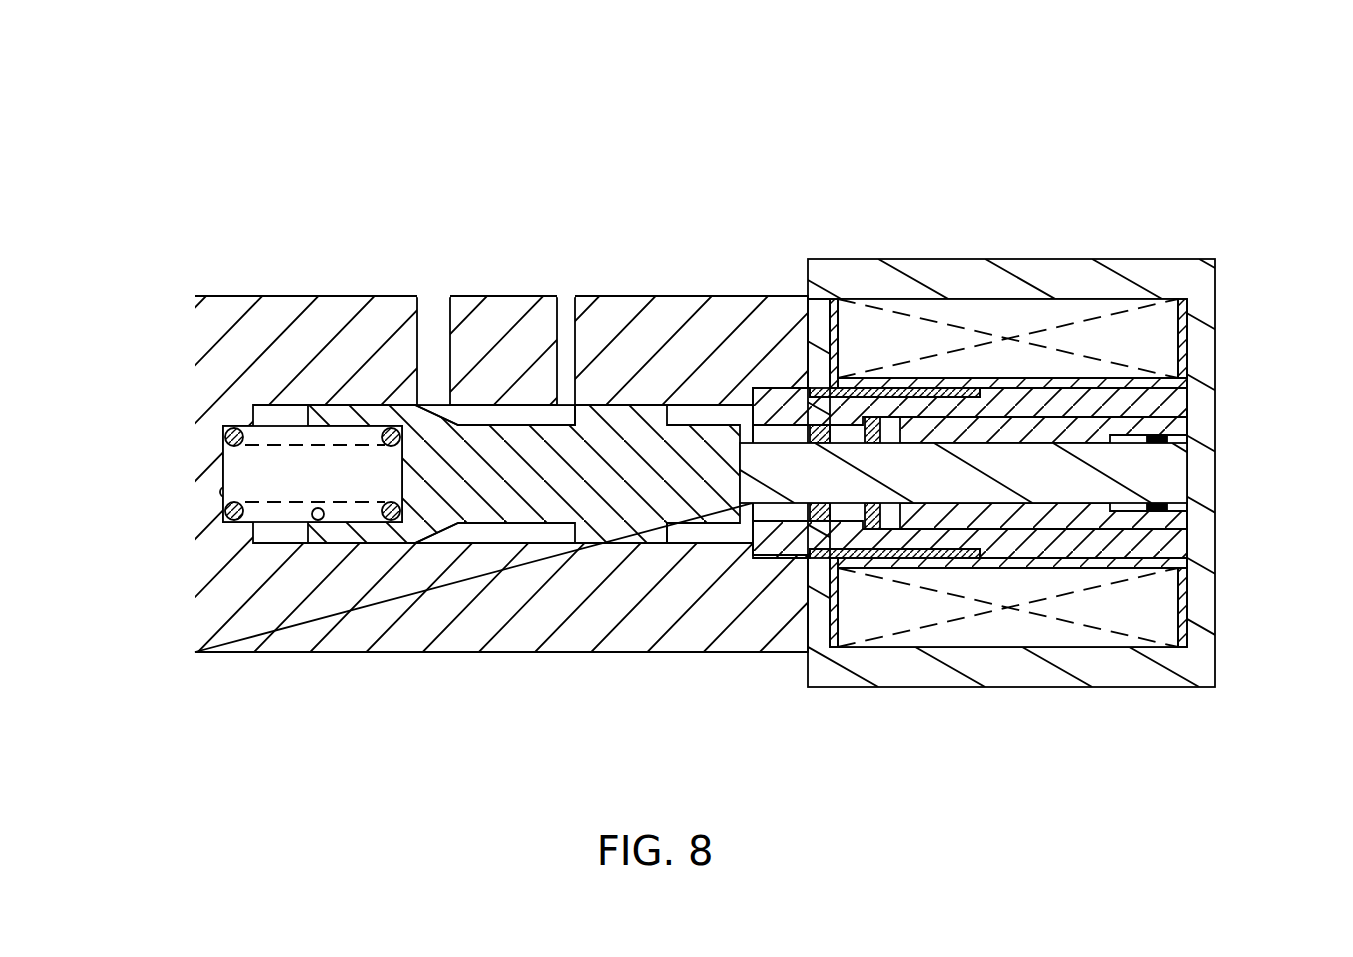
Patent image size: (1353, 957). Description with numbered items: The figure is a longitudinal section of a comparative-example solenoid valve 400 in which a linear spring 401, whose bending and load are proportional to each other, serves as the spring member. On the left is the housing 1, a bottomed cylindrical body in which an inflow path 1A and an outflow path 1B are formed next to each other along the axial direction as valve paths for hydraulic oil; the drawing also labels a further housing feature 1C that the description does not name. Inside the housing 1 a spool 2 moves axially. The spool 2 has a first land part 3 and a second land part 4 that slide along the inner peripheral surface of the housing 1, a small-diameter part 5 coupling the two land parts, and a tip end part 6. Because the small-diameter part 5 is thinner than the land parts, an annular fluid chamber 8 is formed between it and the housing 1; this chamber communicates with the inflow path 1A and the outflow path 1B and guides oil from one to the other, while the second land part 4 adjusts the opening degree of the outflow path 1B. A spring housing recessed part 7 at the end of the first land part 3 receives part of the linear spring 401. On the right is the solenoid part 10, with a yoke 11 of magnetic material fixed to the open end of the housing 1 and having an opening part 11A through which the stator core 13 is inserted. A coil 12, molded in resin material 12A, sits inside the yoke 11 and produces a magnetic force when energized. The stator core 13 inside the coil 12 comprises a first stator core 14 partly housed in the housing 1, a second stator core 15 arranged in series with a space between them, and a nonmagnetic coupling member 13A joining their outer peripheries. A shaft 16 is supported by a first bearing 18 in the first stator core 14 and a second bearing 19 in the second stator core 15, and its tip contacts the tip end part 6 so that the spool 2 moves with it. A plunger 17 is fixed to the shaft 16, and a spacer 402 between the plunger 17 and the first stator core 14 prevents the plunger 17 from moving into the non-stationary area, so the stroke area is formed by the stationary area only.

The solenoid valve 400 is at (1252, 140).
The solenoid part 10 is at (1142, 230).
The housing 1 is at (358, 296).
The inflow path 1A is at (432, 318).
The outflow path 1B is at (568, 318).
The breathing hole 1C is at (220, 492).
The fluid chamber 8 is at (508, 415).
The spool 2 is at (537, 526).
The first land part 3 is at (340, 524).
The second land part 4 is at (612, 530).
The small-diameter part 5 is at (482, 512).
The tip end part 6 is at (710, 512).
The spring housing recessed part 7 is at (318, 520).
The linear spring 401 is at (233, 522).
The spacer 402 is at (872, 512).
The yoke 11 is at (1078, 283).
The opening part 11A is at (818, 385).
The coil 12 is at (1160, 345).
The resin material 12A is at (1187, 318).
The stator core 13 is at (998, 361).
The coupling member 13A is at (918, 392).
The first stator core 14 is at (875, 388).
The second stator core 15 is at (970, 396).
The shaft 16 is at (1160, 487).
The plunger 17 is at (1018, 515).
The first bearing 18 is at (812, 522).
The second bearing 19 is at (1157, 512).